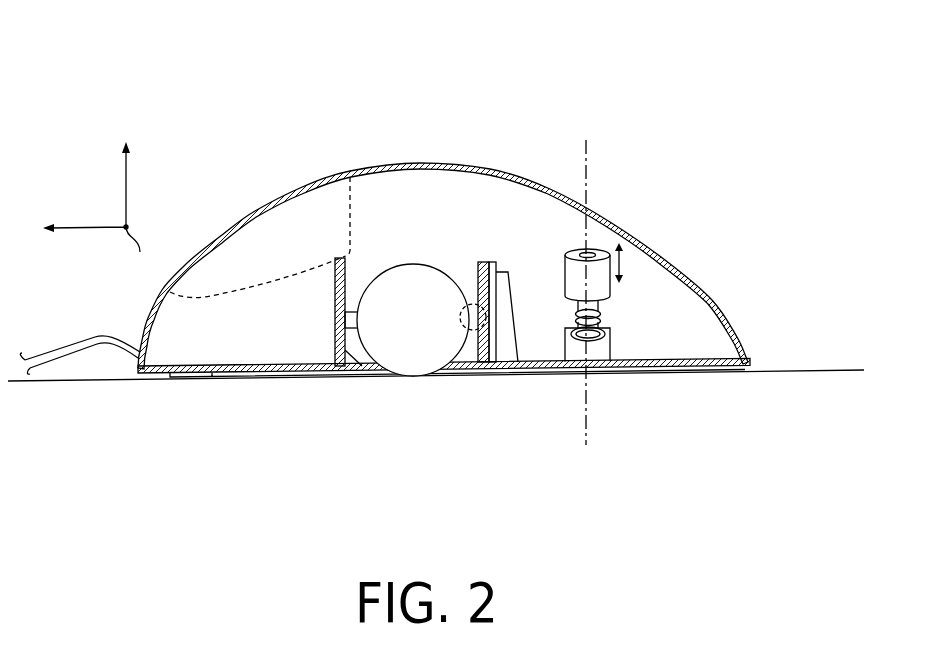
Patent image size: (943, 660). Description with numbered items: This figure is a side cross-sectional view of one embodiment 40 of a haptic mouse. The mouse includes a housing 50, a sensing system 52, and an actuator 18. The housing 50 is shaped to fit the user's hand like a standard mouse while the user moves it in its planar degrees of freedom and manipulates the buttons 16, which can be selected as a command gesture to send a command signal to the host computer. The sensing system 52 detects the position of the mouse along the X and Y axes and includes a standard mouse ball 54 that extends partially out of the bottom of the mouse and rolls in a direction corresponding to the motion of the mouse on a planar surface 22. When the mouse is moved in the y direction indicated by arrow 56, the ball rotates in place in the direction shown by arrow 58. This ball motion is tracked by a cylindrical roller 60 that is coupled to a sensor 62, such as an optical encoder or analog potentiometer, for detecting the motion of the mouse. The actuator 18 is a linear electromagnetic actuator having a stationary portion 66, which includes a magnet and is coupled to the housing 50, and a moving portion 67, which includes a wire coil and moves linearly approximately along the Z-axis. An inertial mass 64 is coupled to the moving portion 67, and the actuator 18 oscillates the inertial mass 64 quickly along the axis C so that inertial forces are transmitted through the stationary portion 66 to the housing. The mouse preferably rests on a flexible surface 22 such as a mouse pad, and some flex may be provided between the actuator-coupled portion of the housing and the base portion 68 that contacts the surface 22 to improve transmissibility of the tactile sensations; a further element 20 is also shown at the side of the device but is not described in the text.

The buttons 16 is at (285, 216).
The actuator 18 is at (643, 294).
The flexible member 20 is at (73, 344).
The planar surface 22 is at (800, 366).
The embodiment of mouse 40 is at (200, 57).
The housing 50 is at (432, 167).
The sensing system 52 is at (383, 392).
The mouse ball 54 is at (413, 377).
The arrow 56 is at (90, 227).
The arrow 58 is at (440, 256).
The cylindrical roller 60 is at (476, 318).
The sensor 62 is at (509, 272).
The inertial mass 64 is at (575, 281).
The stationary portion 66 is at (608, 350).
The moving portion 67 is at (599, 314).
The base portion 68 is at (232, 372).